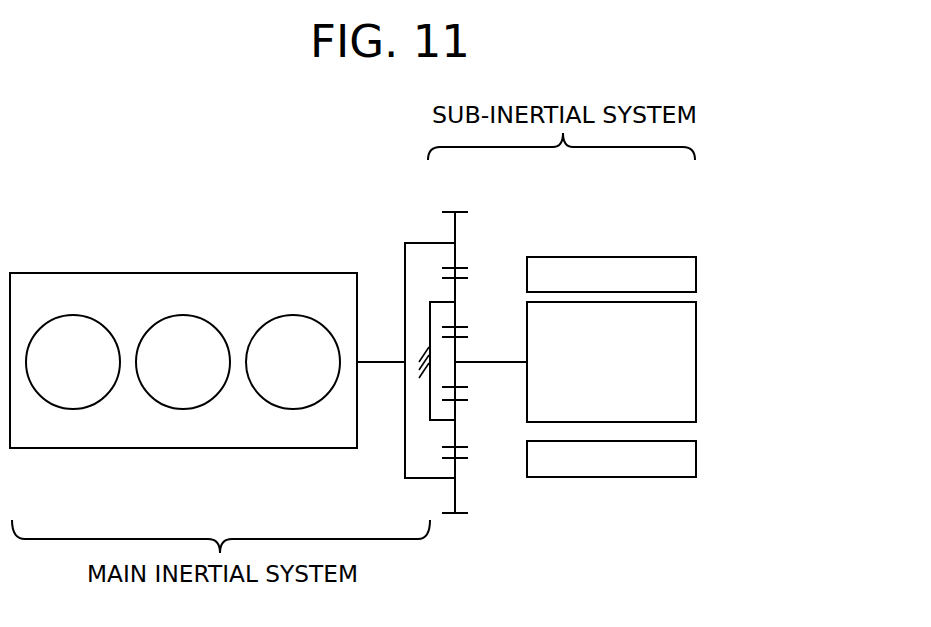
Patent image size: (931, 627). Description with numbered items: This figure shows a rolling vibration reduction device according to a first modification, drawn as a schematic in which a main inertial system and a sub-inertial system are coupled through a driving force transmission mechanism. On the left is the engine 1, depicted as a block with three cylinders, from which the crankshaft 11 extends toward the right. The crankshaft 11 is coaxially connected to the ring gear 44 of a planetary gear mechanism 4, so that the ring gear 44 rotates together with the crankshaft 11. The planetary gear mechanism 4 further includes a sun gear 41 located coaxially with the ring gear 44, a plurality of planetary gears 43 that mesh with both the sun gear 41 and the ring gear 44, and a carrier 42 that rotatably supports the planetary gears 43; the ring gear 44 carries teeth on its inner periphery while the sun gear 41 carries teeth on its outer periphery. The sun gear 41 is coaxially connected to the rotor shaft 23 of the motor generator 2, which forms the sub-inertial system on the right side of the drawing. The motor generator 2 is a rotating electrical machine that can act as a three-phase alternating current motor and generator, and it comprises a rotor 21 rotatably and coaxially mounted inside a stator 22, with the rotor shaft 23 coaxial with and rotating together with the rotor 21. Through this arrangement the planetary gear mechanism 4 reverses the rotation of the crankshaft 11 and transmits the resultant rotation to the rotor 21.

The engine 1 is at (281, 273).
The crankshaft 11 is at (380, 362).
The planetary gear mechanism 4 is at (410, 181).
The carrier 42 is at (430, 302).
The sun gear 41 is at (456, 373).
The planetary gears 43 is at (456, 430).
The ring gear 44 is at (460, 514).
The rotor shaft 23 is at (500, 362).
The motor generator 2 is at (666, 367).
The rotor 21 is at (696, 392).
The stator 22 is at (696, 457).